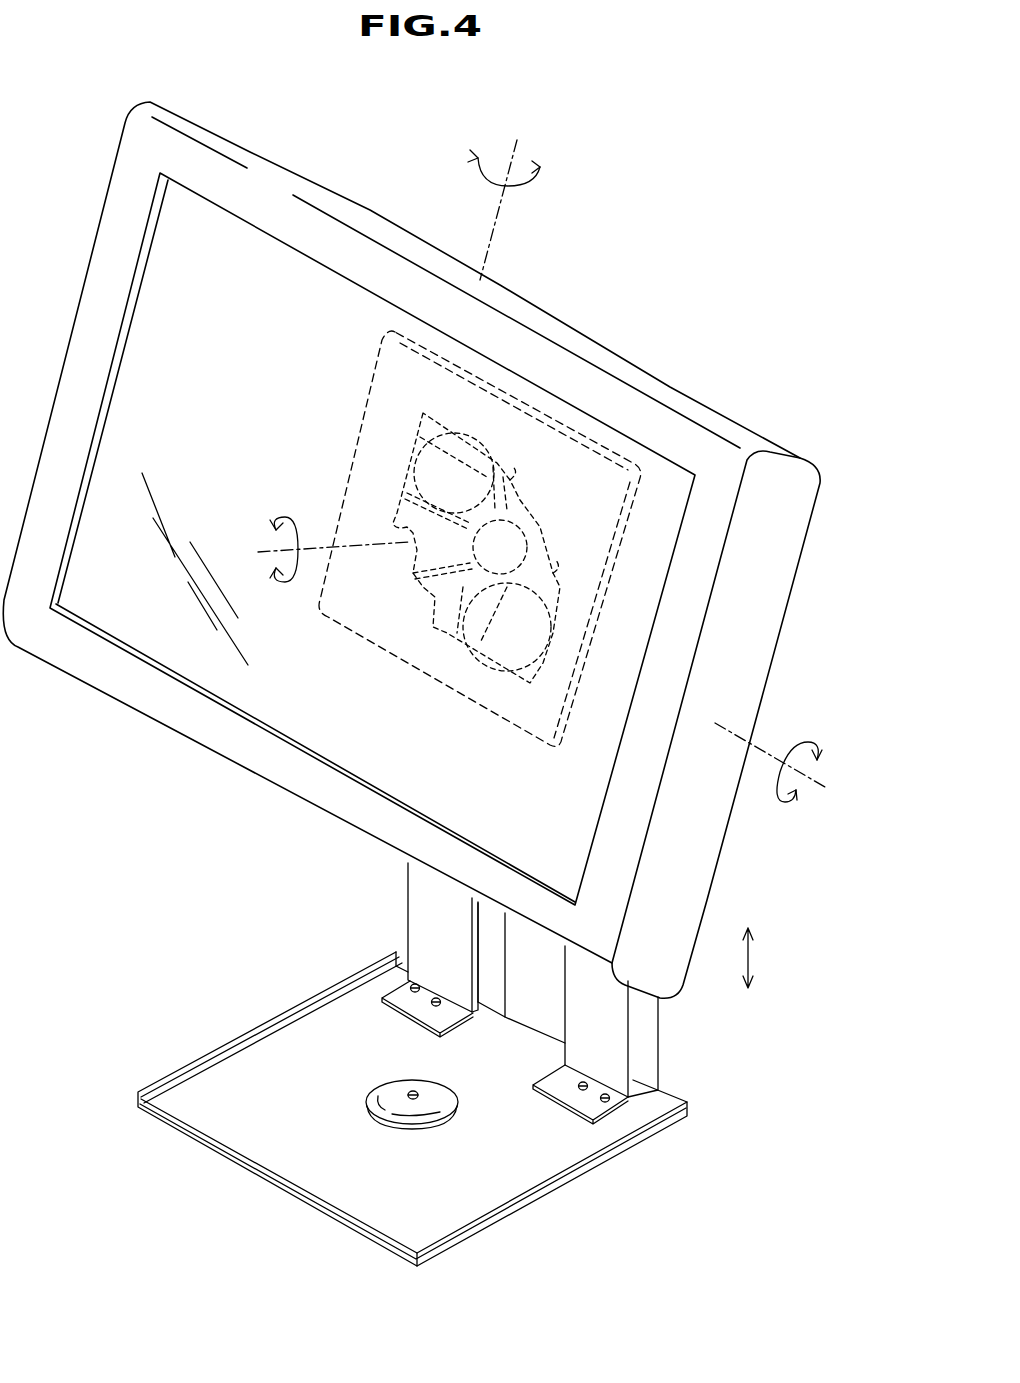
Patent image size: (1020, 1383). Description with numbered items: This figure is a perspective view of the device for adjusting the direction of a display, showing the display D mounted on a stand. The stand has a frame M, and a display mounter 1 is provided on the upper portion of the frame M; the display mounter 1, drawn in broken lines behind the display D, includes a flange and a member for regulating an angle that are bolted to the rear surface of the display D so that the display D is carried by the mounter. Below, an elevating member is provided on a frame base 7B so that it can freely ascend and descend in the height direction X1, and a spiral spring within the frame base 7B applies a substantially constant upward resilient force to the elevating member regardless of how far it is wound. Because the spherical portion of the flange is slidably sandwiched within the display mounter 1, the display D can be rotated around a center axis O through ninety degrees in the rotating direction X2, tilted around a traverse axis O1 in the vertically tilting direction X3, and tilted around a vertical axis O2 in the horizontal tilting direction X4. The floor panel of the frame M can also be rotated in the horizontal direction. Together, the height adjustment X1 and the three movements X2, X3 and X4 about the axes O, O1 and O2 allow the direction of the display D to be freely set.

The display D is at (347, 247).
The display mounter 1 is at (560, 407).
The frame base 7B is at (430, 898).
The frame M is at (668, 1042).
The center axis O is at (324, 553).
The traverse axis O1 is at (786, 768).
The vertical axis O2 is at (510, 196).
The height direction X1 is at (768, 958).
The rotating direction X2 is at (283, 534).
The vertically tilting direction X3 is at (803, 757).
The horizontal tilting direction X4 is at (512, 185).